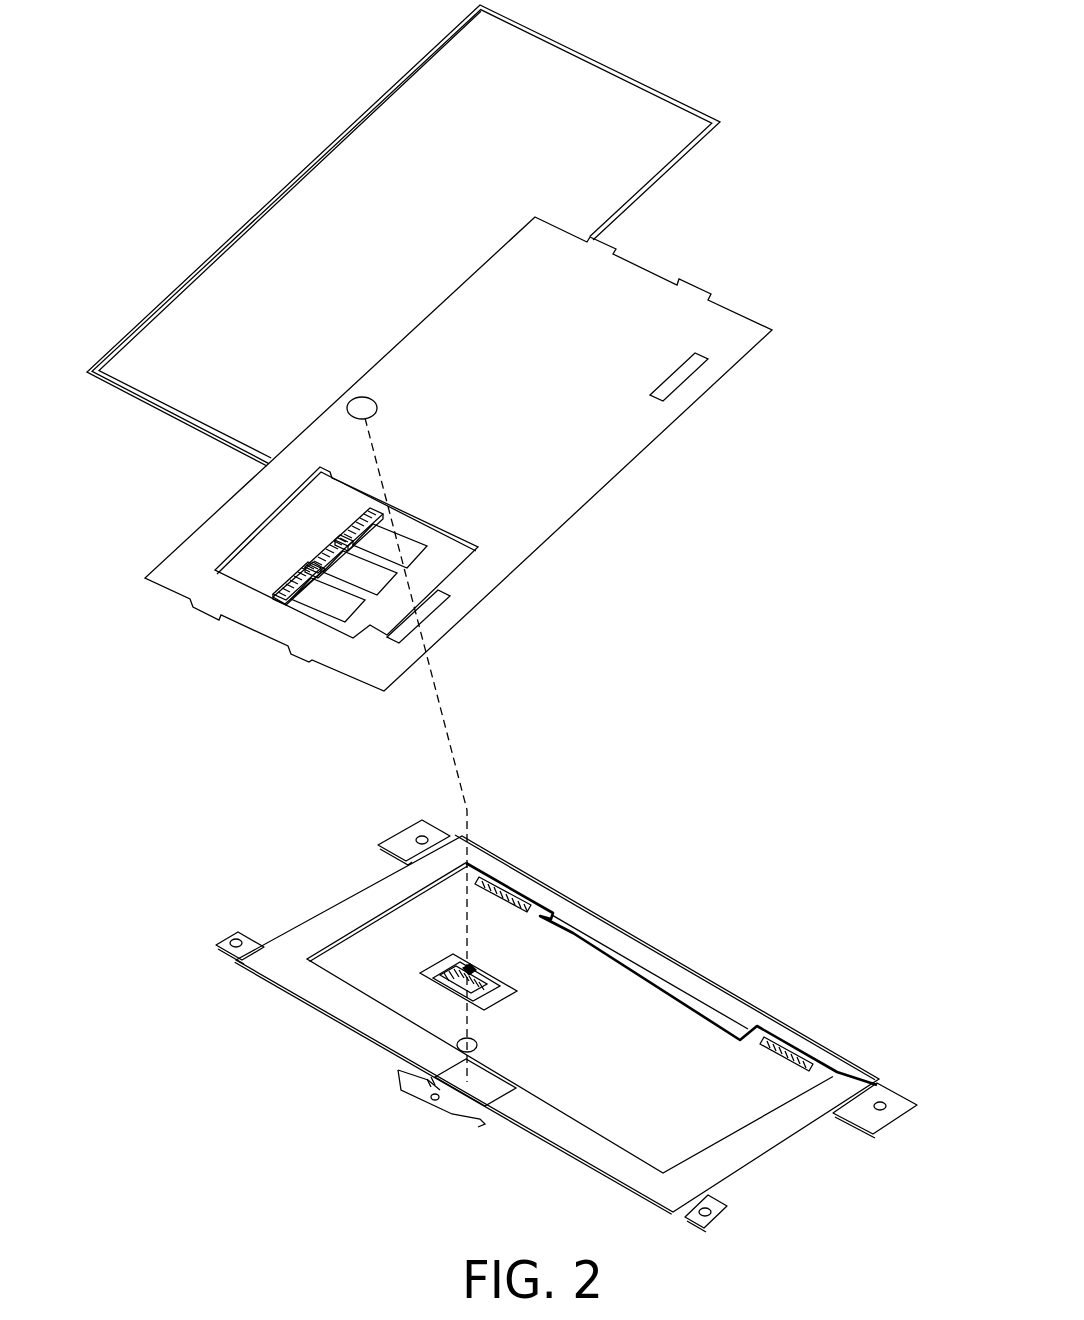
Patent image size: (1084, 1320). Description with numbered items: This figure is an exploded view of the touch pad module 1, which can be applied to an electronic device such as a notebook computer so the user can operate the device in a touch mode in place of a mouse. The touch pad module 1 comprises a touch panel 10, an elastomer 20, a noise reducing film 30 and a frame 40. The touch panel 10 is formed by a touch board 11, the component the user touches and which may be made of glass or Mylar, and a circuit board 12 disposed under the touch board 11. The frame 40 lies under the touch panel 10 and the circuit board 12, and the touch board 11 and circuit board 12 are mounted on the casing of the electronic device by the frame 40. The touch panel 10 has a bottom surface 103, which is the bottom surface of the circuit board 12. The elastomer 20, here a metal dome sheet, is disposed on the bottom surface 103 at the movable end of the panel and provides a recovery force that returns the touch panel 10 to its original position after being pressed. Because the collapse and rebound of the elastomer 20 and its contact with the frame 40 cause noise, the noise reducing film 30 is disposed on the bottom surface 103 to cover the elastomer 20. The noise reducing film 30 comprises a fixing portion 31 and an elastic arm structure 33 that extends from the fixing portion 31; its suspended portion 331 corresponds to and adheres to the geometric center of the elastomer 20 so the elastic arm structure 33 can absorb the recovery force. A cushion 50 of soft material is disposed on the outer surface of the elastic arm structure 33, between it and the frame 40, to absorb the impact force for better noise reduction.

The touch pad module 1 is at (156, 86).
The touch panel 10 is at (245, 179).
The touch board 11 is at (633, 78).
The circuit board 12 is at (655, 288).
The elastomer 20 is at (377, 405).
The bottom surface 103 is at (177, 580).
The frame 40 is at (340, 918).
The noise reducing film 30 is at (503, 985).
The fixing portion 31 is at (448, 962).
The elastic arm structure 33 is at (449, 977).
The suspended portion 331 is at (468, 972).
The cushion 50 is at (480, 1043).